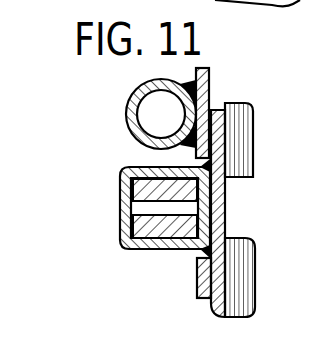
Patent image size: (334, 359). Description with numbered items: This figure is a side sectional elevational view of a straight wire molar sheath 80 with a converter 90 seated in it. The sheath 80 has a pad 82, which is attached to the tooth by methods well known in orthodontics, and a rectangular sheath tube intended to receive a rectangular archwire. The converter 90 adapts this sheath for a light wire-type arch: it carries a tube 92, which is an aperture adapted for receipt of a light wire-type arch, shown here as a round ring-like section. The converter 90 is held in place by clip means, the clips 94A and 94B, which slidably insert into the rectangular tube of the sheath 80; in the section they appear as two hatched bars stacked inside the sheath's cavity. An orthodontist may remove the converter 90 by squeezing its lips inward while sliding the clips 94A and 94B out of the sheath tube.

The straight wire molar sheath 80 is at (225, 204).
The pad 82 is at (218, 137).
The converter 90 is at (211, 90).
The tube 92 is at (126, 115).
The clip 94A is at (152, 227).
The clip 94B is at (150, 188).